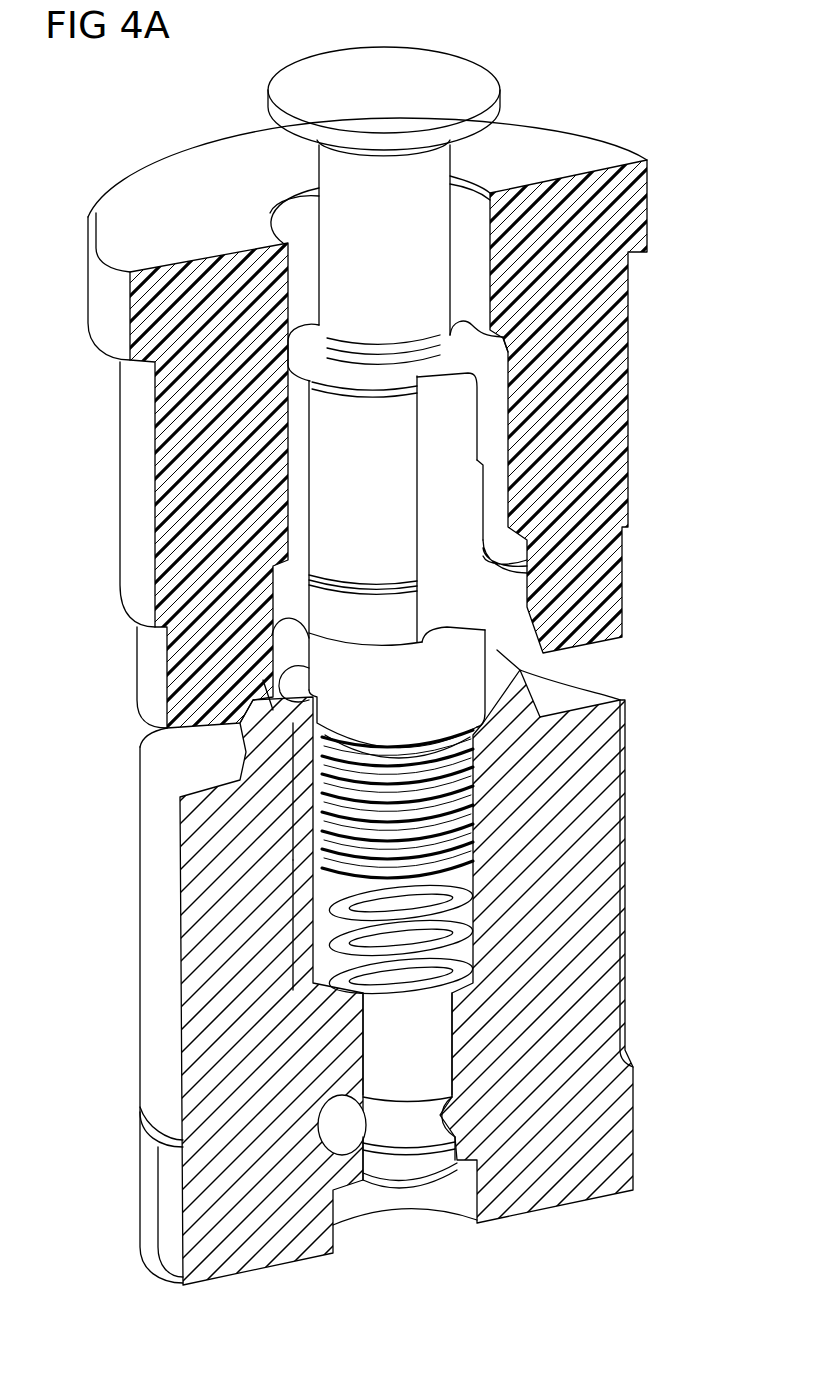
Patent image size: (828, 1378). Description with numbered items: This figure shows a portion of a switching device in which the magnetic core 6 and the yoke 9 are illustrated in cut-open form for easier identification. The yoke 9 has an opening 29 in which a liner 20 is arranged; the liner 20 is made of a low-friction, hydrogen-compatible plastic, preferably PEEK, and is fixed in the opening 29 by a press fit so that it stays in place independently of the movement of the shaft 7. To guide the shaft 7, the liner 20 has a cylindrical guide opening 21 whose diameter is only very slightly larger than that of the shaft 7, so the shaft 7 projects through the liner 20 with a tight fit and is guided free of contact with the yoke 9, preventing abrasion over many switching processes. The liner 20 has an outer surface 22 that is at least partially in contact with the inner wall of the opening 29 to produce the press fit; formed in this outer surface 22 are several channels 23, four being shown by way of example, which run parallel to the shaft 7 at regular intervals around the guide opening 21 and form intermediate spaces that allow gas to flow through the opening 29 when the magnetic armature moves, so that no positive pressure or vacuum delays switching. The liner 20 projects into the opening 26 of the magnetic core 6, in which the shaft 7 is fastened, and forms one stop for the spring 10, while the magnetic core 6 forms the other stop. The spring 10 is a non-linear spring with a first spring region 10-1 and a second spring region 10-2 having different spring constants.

The magnetic core 6 is at (625, 1122).
The shaft 7 is at (380, 1027).
The yoke 9 is at (618, 313).
The spring 10 is at (453, 797).
The first spring region 10-1 is at (293, 795).
The second spring region 10-2 is at (293, 923).
The liner 20 is at (340, 517).
The guide opening 21 is at (343, 360).
The outer surface 22 is at (497, 420).
The channel 23 is at (450, 480).
The opening 26 is at (307, 677).
The opening 29 is at (470, 227).